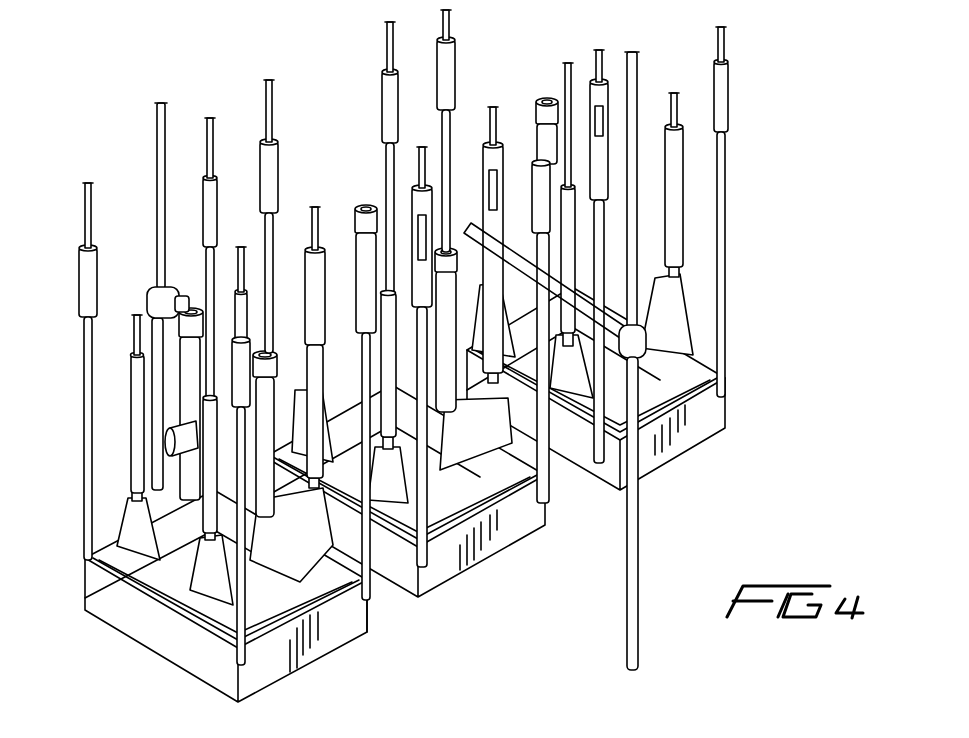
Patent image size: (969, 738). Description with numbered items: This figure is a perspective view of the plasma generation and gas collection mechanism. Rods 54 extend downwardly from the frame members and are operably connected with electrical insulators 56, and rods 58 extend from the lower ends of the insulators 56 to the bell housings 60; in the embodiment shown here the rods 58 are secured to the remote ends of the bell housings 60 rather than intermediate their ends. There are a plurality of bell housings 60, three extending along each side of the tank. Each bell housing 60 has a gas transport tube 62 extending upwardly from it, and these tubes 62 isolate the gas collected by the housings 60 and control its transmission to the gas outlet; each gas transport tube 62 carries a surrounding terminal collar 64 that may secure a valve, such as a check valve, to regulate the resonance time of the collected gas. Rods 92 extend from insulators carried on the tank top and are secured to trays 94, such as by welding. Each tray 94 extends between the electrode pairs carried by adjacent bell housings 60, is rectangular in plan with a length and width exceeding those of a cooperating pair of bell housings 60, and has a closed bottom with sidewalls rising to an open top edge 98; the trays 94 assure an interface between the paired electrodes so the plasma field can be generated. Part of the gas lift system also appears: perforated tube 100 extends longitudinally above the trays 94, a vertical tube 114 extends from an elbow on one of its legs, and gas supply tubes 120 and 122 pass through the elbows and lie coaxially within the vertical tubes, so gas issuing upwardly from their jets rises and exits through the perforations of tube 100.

The rod 54 is at (568, 165).
The electrical insulator 56 is at (420, 190).
The rod 58 is at (93, 541).
The bell housing 60 is at (167, 522).
The gas transport tube 62 is at (188, 380).
The terminal collar 64 is at (366, 212).
The rod 92 is at (93, 475).
The tray 94 is at (287, 652).
The open top edge 98 is at (330, 588).
The perforated tube 100 is at (473, 267).
The vertical tube 114 is at (640, 555).
The gas supply tube 120 is at (163, 138).
The gas supply tube 122 is at (634, 76).